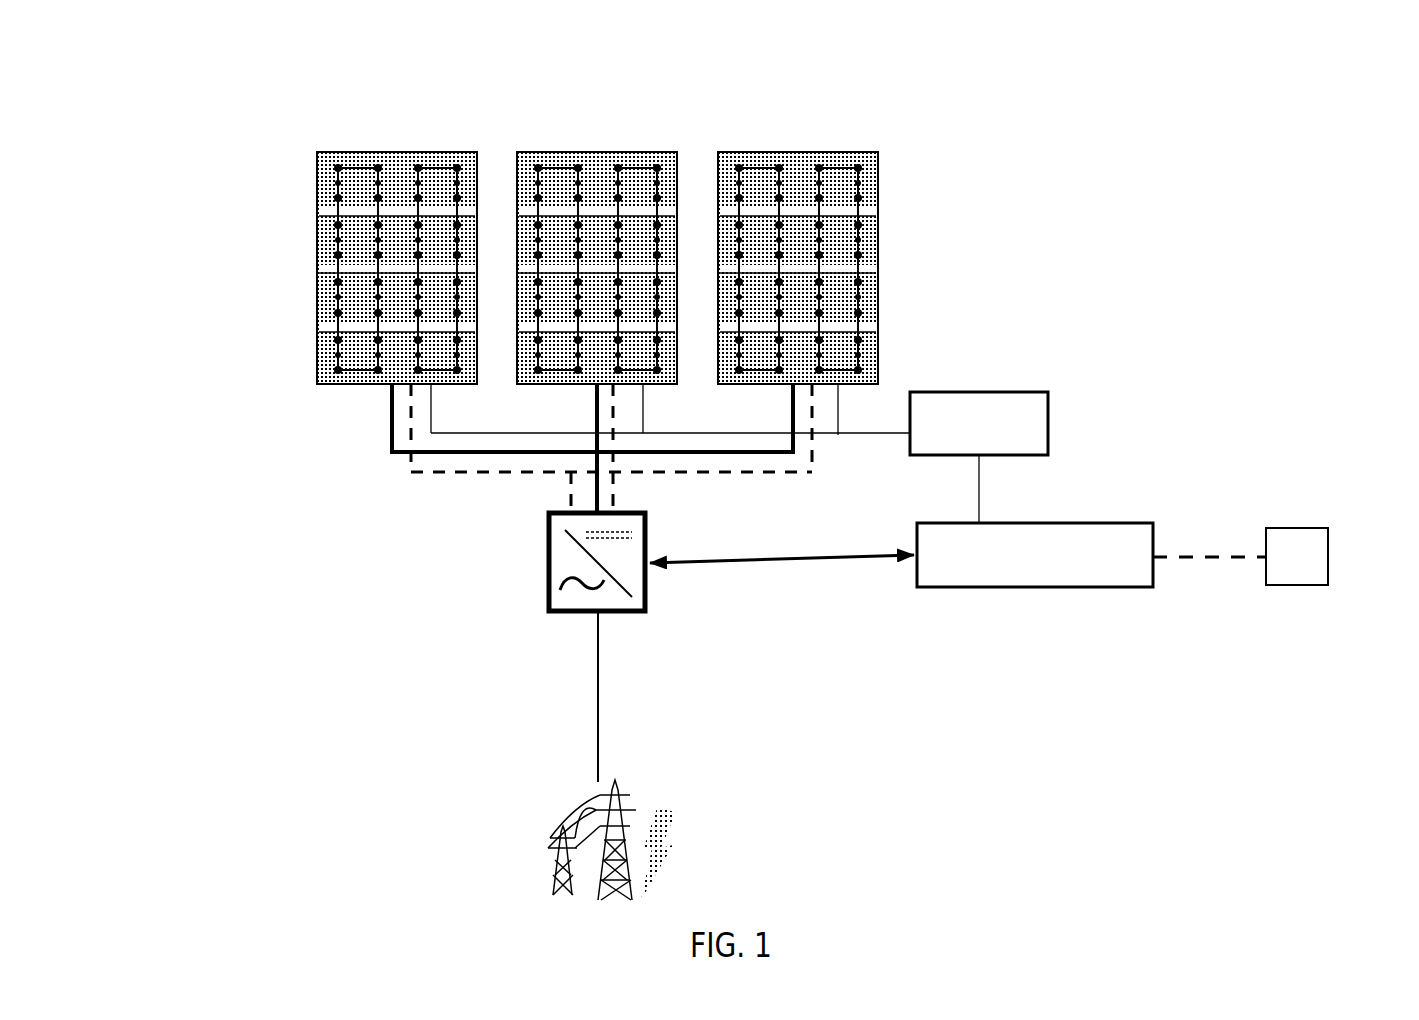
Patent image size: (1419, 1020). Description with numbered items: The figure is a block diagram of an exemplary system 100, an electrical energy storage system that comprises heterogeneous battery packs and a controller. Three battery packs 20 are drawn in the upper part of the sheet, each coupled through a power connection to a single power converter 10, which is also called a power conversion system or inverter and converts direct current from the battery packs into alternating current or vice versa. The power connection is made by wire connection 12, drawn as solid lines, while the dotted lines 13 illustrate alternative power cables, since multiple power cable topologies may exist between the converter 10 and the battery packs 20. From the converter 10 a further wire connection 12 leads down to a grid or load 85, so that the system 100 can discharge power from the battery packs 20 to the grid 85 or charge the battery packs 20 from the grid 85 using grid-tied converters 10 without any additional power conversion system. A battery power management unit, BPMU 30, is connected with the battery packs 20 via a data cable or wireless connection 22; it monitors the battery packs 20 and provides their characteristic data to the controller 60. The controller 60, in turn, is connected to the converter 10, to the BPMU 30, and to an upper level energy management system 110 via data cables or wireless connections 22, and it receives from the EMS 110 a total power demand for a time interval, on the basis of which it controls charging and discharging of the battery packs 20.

The system 100 is at (198, 102).
The battery pack 20 is at (373, 152).
The wire connection 12 is at (390, 435).
The alternative power cables 13 is at (438, 473).
The power converter 10 is at (545, 600).
The data cable or wireless connection 22 is at (840, 410).
The battery power management unit 30 is at (1022, 406).
The controller 60 is at (1145, 521).
The energy management system 110 is at (1297, 585).
The grid or load 85 is at (652, 797).